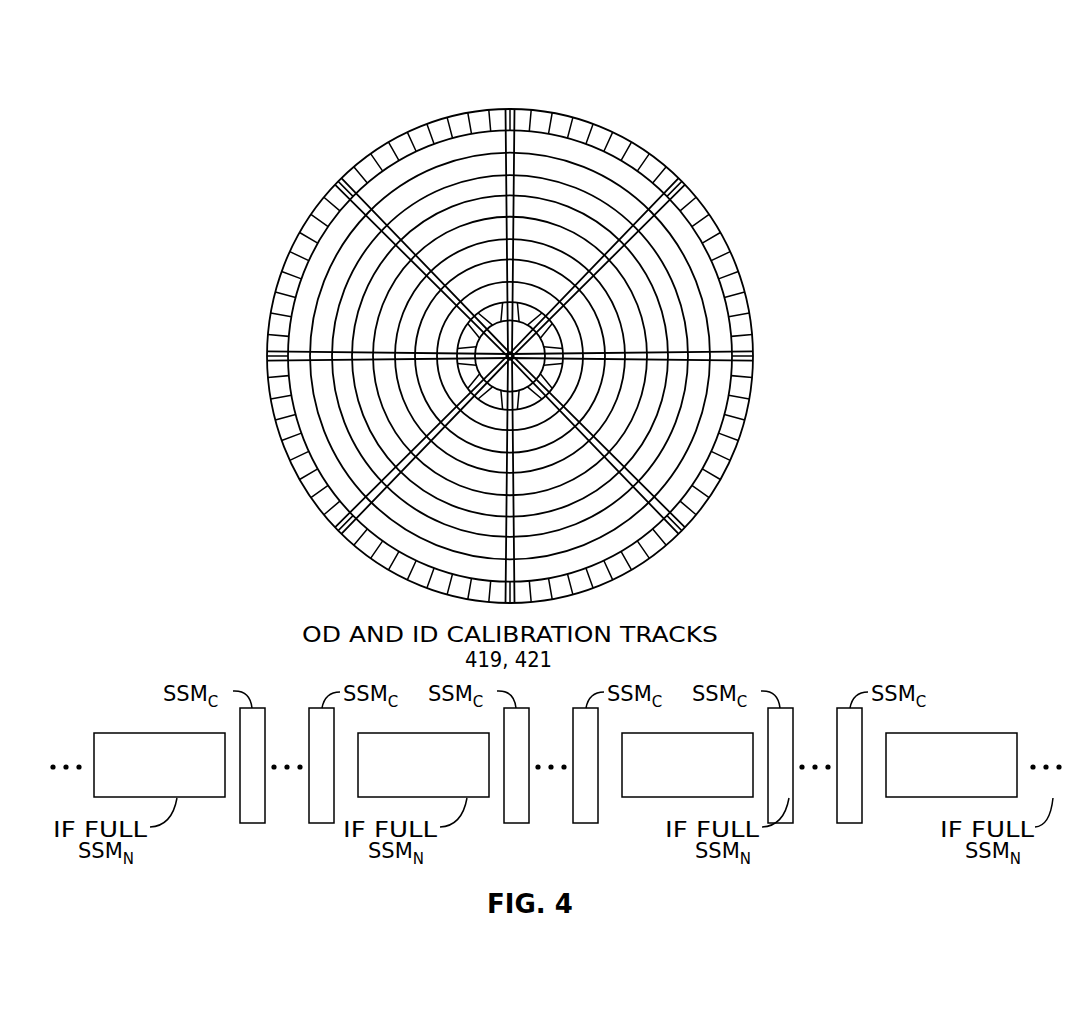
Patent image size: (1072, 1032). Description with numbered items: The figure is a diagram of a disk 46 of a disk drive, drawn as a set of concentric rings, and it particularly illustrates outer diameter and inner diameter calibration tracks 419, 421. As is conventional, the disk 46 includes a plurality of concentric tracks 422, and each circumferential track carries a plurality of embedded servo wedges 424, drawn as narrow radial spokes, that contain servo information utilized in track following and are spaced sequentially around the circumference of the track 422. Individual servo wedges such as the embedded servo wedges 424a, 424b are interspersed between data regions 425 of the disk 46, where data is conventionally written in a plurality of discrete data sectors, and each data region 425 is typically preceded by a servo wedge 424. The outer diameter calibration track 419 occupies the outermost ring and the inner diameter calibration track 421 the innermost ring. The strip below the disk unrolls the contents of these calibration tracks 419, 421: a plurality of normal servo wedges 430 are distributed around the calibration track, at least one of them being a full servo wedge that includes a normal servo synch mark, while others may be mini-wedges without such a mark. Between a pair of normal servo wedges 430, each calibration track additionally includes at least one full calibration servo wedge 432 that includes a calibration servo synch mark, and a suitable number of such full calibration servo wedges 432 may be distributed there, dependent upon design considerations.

The disk 46 is at (352, 82).
The outer diameter calibration track 419 is at (709, 217).
The inner diameter calibration track 421 is at (560, 329).
The concentric tracks 422 is at (310, 277).
The embedded servo wedges 424 is at (512, 112).
The embedded servo wedge 424a is at (340, 182).
The embedded servo wedge 424b is at (272, 356).
The data regions 425 is at (572, 172).
The normal servo wedges 430 is at (117, 733).
The full calibration servo wedge 432 is at (867, 843).